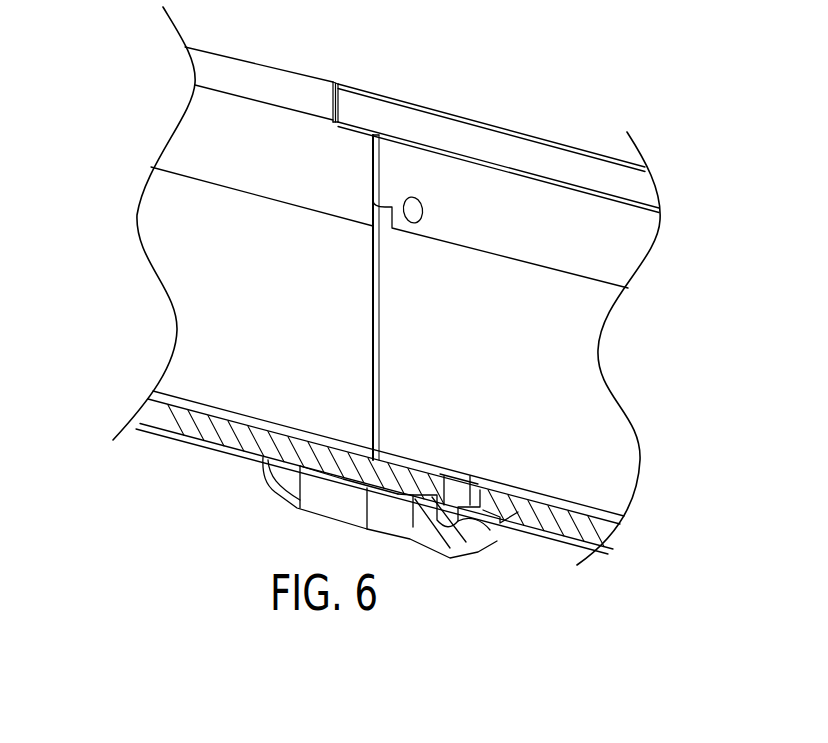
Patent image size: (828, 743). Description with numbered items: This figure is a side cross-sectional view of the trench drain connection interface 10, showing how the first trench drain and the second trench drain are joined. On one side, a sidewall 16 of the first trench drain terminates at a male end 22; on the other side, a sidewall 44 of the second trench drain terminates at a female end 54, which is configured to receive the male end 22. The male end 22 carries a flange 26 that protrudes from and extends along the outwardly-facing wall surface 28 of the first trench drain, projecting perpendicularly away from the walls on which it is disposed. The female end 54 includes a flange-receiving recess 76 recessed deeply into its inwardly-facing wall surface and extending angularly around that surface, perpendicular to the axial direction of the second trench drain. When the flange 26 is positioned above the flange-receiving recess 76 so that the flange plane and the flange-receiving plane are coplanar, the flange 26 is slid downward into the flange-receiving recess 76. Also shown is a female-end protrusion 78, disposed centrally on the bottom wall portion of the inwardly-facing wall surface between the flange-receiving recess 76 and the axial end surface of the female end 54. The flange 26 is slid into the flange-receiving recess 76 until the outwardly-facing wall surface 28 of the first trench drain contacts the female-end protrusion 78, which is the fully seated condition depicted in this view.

The trench drain connection interface 10 is at (399, 54).
The sidewall 16 is at (252, 312).
The sidewall 44 is at (540, 364).
The male end 22 is at (472, 462).
The outwardly-facing wall surface 28 is at (198, 441).
The female end 54 is at (445, 567).
The flange-receiving recess 76 is at (466, 523).
The female-end protrusion 78 is at (403, 485).
The flange 26 is at (451, 506).